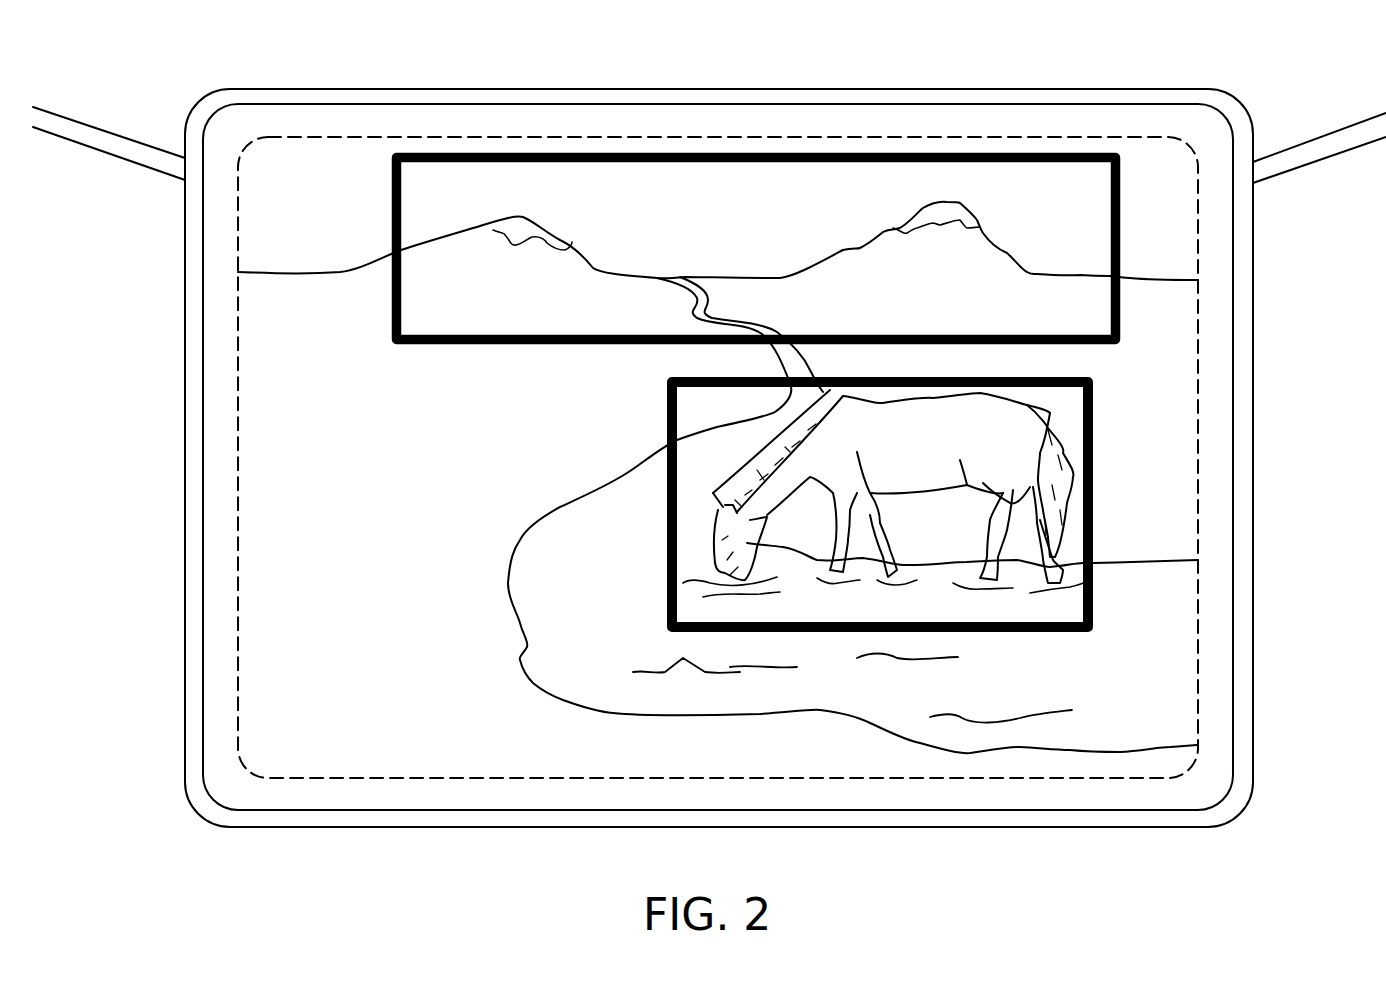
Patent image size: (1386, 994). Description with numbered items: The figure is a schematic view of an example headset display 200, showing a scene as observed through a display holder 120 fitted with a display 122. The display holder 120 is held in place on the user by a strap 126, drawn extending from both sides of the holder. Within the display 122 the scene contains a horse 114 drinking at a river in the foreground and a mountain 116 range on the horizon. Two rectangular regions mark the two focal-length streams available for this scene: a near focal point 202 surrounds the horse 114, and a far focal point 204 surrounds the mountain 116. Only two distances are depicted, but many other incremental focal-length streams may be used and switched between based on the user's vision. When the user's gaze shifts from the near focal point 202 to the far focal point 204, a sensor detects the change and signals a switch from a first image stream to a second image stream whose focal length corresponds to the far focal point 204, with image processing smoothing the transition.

The horse 114 is at (760, 462).
The mountain 116 is at (927, 208).
The display holder 120 is at (295, 828).
The display 122 is at (428, 778).
The strap 126 is at (123, 137).
The headset display 200 is at (730, 874).
The near focal point 202 is at (667, 417).
The far focal point 204 is at (457, 345).